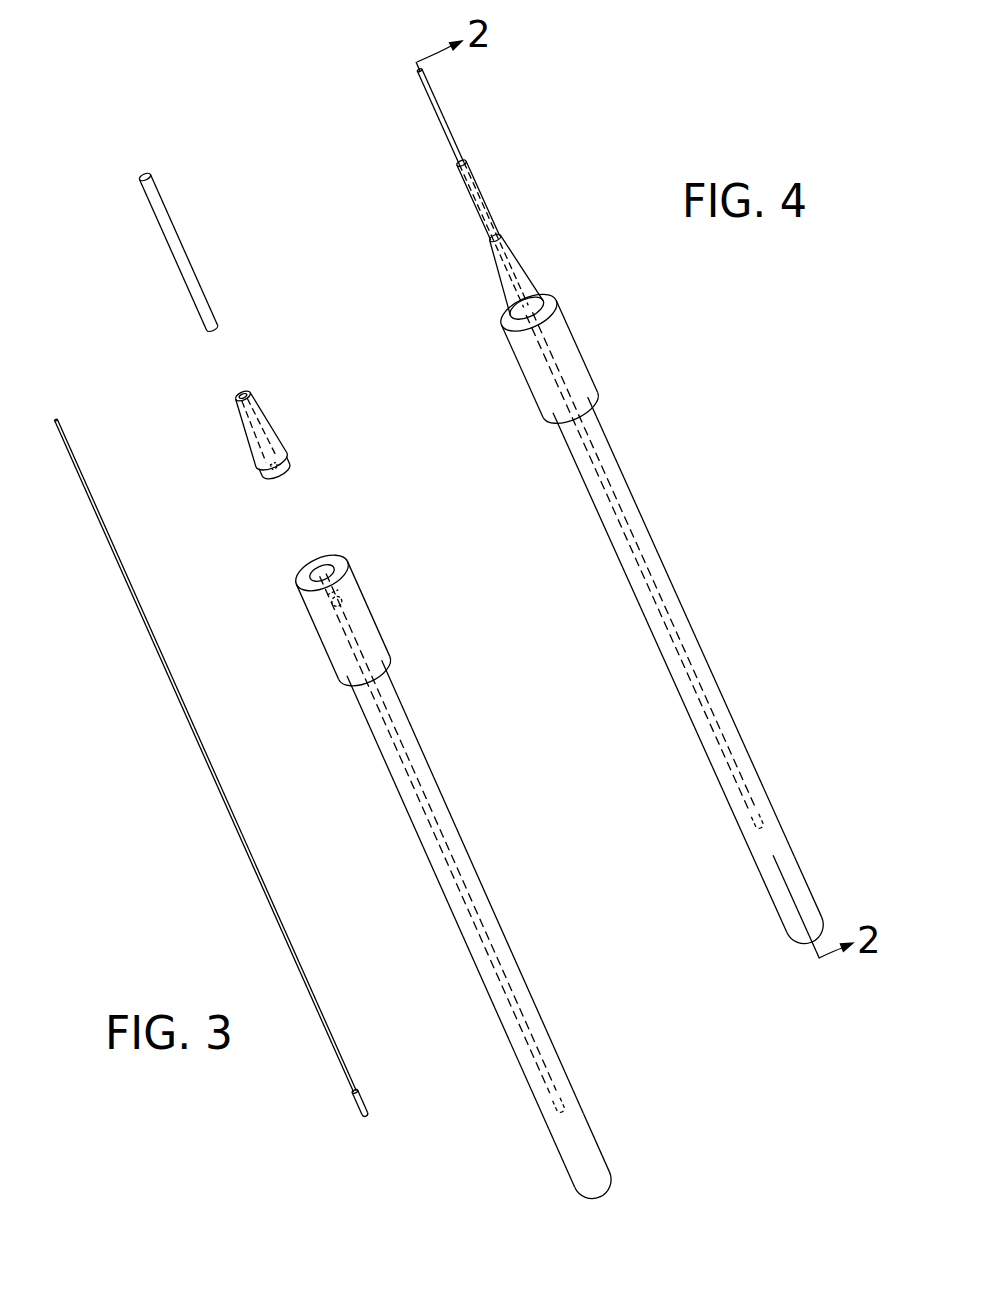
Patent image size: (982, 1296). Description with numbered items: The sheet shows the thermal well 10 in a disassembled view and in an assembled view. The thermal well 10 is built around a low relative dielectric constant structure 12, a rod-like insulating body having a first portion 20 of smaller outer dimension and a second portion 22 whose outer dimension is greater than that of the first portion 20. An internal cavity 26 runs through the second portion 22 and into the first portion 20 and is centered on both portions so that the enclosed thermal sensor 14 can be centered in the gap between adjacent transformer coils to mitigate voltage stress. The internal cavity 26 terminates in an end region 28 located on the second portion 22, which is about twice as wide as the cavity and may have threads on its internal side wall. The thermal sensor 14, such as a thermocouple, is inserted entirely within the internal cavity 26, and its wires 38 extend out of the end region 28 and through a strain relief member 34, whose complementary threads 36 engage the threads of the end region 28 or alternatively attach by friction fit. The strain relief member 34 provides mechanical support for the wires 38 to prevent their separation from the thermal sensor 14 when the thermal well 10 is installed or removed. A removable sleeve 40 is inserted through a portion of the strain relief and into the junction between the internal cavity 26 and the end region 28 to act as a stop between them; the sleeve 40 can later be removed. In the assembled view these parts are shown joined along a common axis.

In FIG. 4, the thermal well 10 is at (627, 509).
In FIG. 4, the low relative dielectric constant structure 12 is at (650, 533).
In FIG. 3, the low relative dielectric constant structure 12 is at (424, 725).
In FIG. 4, the thermal sensor 14 is at (597, 489).
In FIG. 3, the thermal sensor 14 is at (347, 1111).
In FIG. 4, the first portion 20 is at (749, 699).
In FIG. 3, the first portion 20 is at (564, 1160).
In FIG. 4, the second portion 22 is at (524, 366).
In FIG. 3, the second portion 22 is at (367, 600).
In FIG. 3, the internal cavity 26 is at (474, 866).
In FIG. 3, the end region 28 is at (329, 631).
In FIG. 4, the strain relief member 34 is at (538, 252).
In FIG. 3, the strain relief member 34 is at (280, 410).
In FIG. 3, the complementary threads 36 is at (303, 485).
In FIG. 4, the wires 38 is at (458, 108).
In FIG. 4, the removable sleeve 40 is at (495, 187).
In FIG. 3, the removable sleeve 40 is at (196, 232).